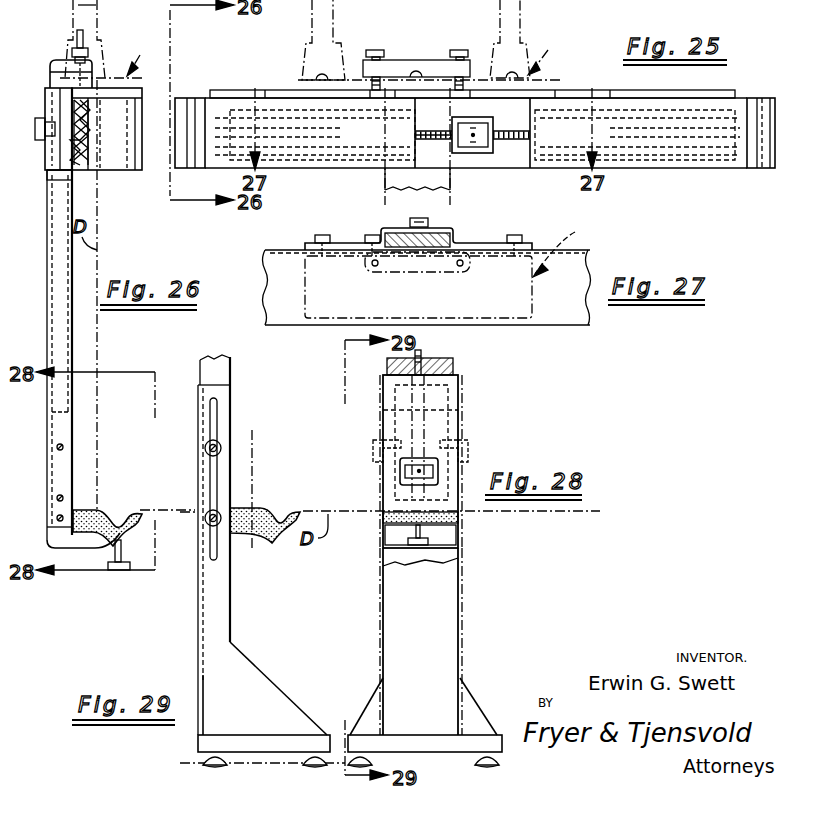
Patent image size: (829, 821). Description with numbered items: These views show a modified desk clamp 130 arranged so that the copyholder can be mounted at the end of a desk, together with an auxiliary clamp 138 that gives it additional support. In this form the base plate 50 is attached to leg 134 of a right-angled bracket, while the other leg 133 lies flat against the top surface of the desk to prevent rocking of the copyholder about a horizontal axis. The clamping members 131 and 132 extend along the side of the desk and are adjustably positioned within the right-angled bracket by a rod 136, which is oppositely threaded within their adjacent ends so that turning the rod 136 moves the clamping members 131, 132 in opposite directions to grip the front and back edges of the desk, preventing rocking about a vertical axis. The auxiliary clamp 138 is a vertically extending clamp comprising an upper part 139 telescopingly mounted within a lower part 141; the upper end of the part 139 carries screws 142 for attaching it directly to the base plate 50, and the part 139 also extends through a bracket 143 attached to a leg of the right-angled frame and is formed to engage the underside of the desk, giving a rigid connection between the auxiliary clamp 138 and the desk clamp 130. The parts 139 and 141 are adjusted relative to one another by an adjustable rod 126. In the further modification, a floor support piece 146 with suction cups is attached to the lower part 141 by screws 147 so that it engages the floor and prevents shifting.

In FIG. 25, the base plate 50 is at (431, 40).
In FIG. 27, the base plate 50 is at (564, 247).
In FIG. 26, the base plate 50 is at (106, 39).
In FIG. 28, the adjustable rod 126 is at (421, 355).
In FIG. 25, the desk clamp 130 is at (675, 173).
In FIG. 25, the clamping member 131 is at (182, 119).
In FIG. 25, the clamping member 132 is at (772, 130).
In FIG. 25, the leg of right-angled bracket 133 is at (498, 165).
In FIG. 25, the leg of right-angled bracket 134 is at (245, 96).
In FIG. 27, the leg of right-angled bracket 134 is at (478, 301).
In FIG. 26, the leg of right-angled bracket 134 is at (128, 90).
In FIG. 25, the rod 136 is at (439, 143).
In FIG. 26, the auxiliary clamp 138 is at (78, 342).
In FIG. 27, the upper part 139 is at (452, 241).
In FIG. 26, the upper part 139 is at (64, 172).
In FIG. 26, the lower part 141 is at (60, 399).
In FIG. 29, the lower part 141 is at (220, 372).
In FIG. 28, the lower part 141 is at (445, 425).
In FIG. 25, the screws 142 is at (460, 50).
In FIG. 26, the screws 142 is at (75, 34).
In FIG. 27, the bracket 143 is at (383, 232).
In FIG. 26, the bracket 143 is at (46, 109).
In FIG. 29, the floor support piece 146 is at (195, 619).
In FIG. 28, the floor support piece 146 is at (469, 601).
In FIG. 29, the screws 147 is at (221, 516).